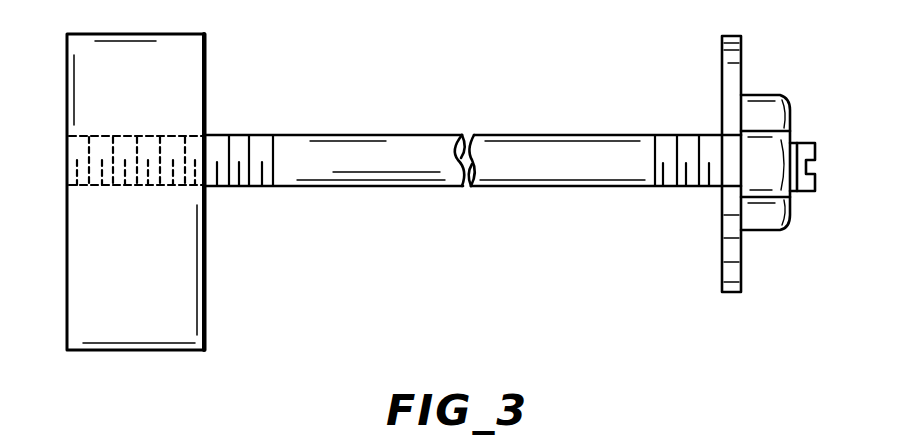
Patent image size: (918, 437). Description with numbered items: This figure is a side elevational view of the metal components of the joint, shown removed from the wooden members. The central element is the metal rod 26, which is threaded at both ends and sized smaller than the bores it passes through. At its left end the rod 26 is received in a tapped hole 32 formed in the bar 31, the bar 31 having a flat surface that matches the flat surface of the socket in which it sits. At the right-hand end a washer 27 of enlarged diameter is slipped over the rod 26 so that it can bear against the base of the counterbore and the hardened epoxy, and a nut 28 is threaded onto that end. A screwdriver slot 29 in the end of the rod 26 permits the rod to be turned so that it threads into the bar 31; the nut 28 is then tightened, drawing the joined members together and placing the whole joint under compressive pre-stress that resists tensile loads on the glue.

The metal rod 26 is at (446, 165).
The washer 27 is at (730, 220).
The nut 28 is at (760, 216).
The screwdriver slot 29 is at (816, 164).
The bar 31 is at (142, 279).
The tapped hole 32 is at (152, 140).